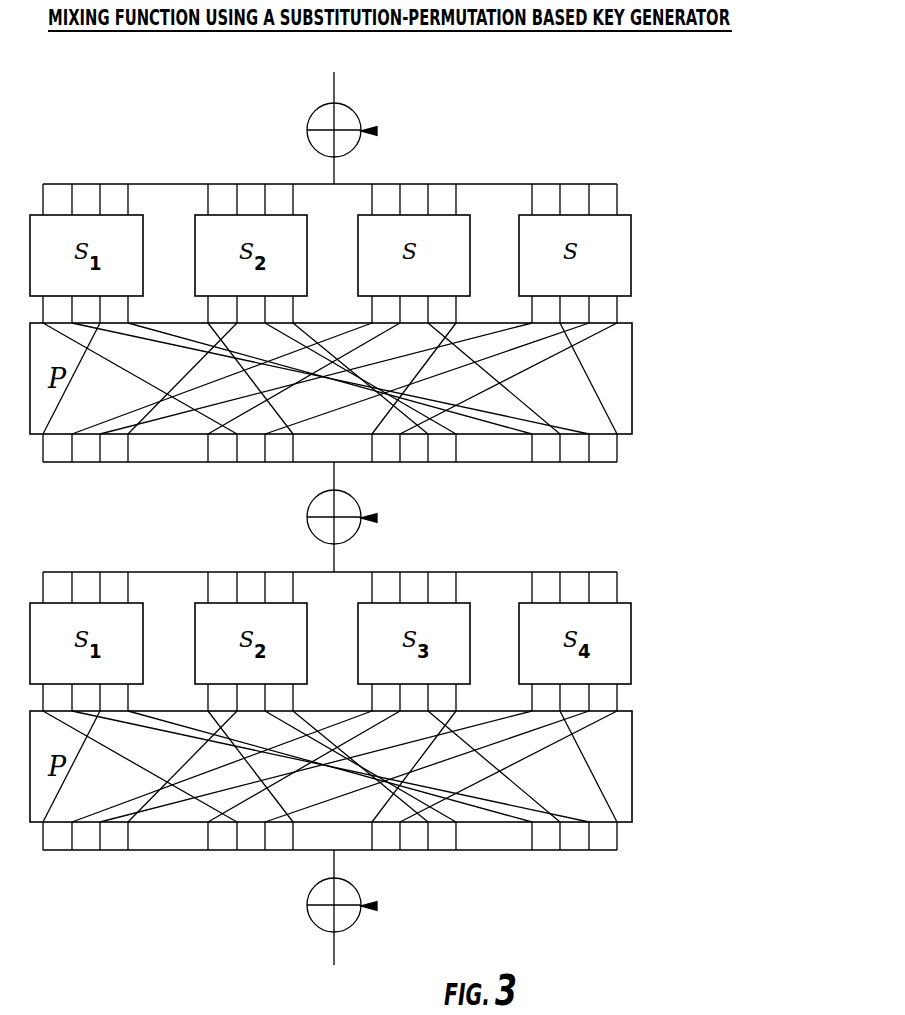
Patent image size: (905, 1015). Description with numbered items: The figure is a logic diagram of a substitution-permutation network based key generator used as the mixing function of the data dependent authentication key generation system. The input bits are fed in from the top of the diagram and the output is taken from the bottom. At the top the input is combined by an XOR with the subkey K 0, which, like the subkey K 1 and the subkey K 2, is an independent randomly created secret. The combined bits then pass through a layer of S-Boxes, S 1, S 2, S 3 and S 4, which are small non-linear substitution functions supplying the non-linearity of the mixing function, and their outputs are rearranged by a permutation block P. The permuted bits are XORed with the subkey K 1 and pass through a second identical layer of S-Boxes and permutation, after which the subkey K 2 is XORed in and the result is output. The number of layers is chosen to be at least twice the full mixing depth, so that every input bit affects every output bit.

The subkey K0 0 is at (376, 131).
The subkey K1 1 is at (376, 518).
The subkey K2 2 is at (376, 906).
The S-Box S3 3 is at (414, 255).
The S-Box S4 4 is at (575, 255).